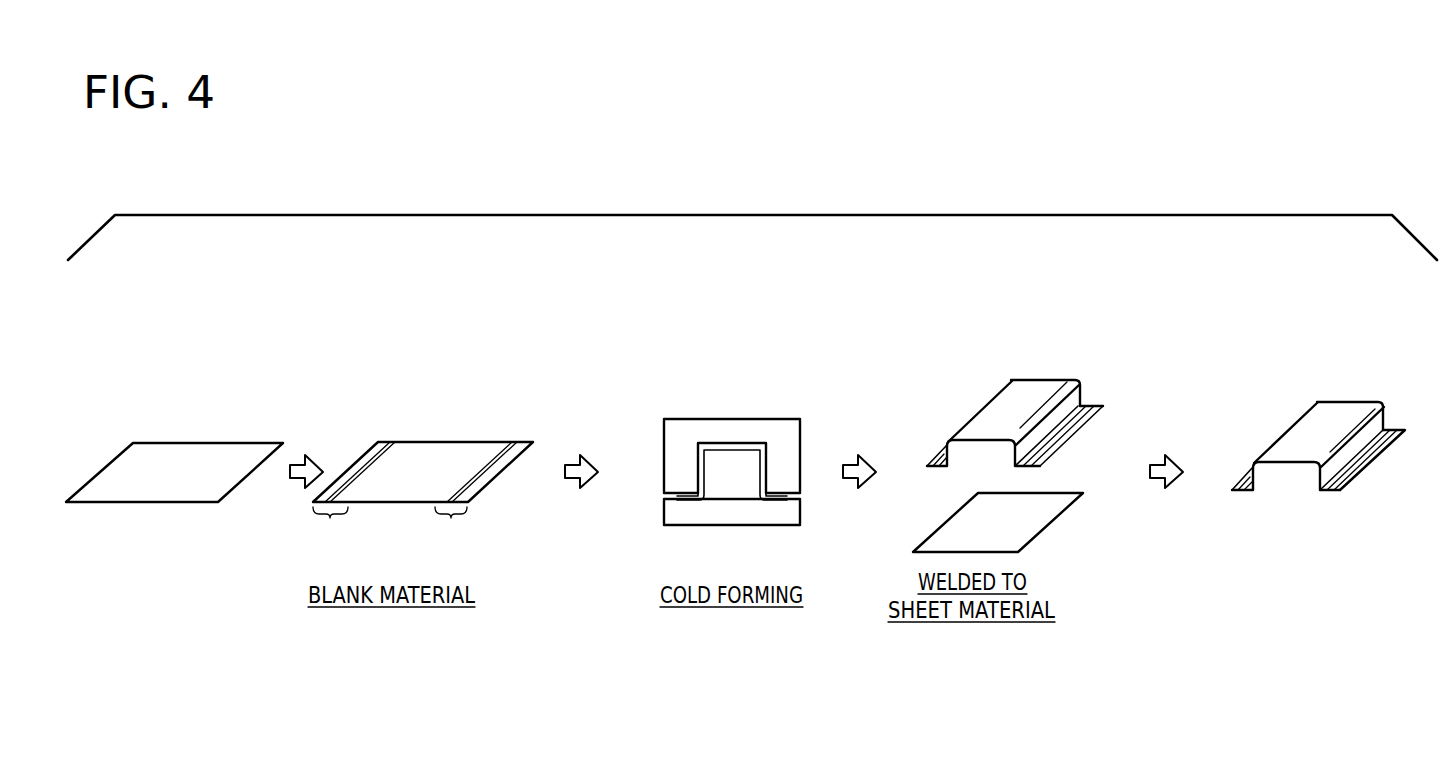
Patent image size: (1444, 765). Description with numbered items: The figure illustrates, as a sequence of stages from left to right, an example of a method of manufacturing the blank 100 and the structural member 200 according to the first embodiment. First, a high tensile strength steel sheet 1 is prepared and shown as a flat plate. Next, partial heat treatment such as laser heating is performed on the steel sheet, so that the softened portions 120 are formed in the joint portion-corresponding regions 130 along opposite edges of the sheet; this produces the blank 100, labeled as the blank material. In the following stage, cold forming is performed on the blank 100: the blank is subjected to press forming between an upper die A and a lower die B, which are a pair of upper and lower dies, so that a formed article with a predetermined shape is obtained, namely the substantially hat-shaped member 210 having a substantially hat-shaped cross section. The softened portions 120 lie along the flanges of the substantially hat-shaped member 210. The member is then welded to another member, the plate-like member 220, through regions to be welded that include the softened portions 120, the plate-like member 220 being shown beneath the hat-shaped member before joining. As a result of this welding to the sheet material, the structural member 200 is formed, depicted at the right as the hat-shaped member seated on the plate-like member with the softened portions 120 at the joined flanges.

The high tensile strength steel sheet 1 is at (211, 441).
The blank 100 is at (457, 440).
The softened portions 120 is at (393, 442).
The joint portion-corresponding regions 130 is at (391, 529).
The upper die A is at (792, 440).
The lower die B is at (792, 511).
The substantially hat-shaped member 210 is at (1041, 381).
The plate-like member 220 is at (1077, 494).
The structural member 200 is at (1343, 401).